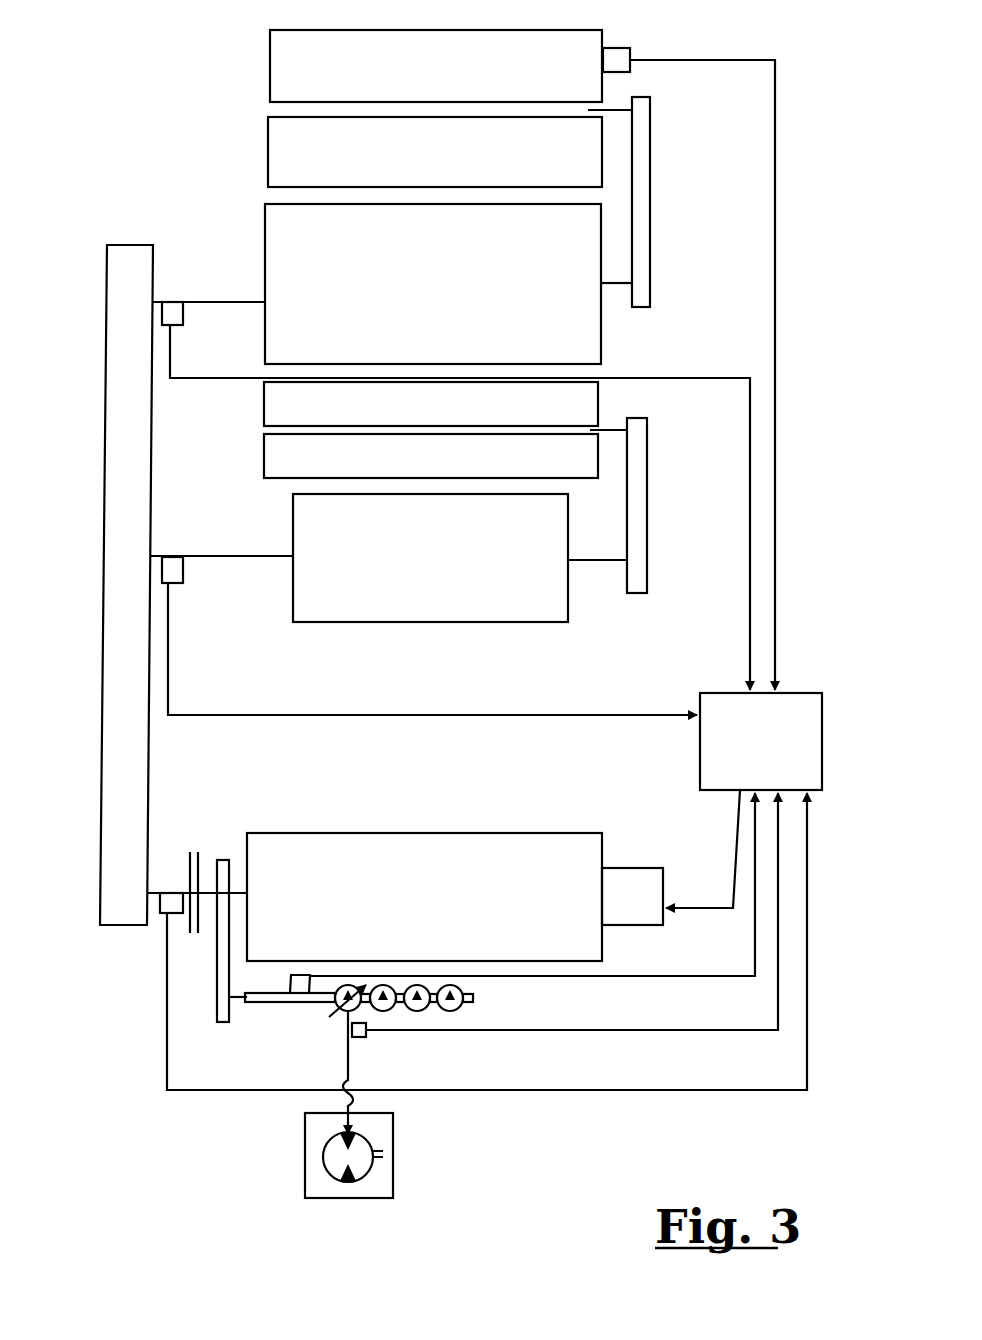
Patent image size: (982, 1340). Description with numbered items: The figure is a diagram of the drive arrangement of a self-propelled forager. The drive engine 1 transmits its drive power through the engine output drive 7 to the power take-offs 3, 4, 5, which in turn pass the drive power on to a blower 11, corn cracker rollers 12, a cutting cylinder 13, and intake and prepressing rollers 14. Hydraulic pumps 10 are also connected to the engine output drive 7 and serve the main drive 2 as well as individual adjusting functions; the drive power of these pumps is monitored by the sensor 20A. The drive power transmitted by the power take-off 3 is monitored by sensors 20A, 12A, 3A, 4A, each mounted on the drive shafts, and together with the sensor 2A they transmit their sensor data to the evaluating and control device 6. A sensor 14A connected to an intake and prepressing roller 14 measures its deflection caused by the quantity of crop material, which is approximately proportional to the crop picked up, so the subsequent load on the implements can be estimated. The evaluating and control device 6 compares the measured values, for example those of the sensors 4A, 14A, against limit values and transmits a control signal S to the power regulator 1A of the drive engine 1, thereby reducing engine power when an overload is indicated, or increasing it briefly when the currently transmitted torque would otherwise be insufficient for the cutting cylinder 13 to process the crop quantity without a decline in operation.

The drive engine 1 is at (435, 916).
The power regulator 1A is at (632, 896).
The main drive 2 is at (380, 1133).
The sensor 2A is at (362, 1040).
The power take-off 3 is at (118, 464).
The sensor 3A is at (178, 570).
The power take-off 4 is at (644, 502).
The sensor 4A is at (175, 310).
The power take-off 5 is at (643, 216).
The evaluating and control device 6 is at (769, 760).
The engine output drive 7 is at (207, 893).
The hydraulic pumps 10 is at (472, 1010).
The blower 11 is at (475, 604).
The corn cracker rollers 12 is at (272, 458).
The sensor 12A is at (168, 912).
The cutting cylinder 13 is at (585, 342).
The intake and prepressing rollers 14 is at (283, 72).
The sensor 14A is at (613, 60).
The sensor 20A is at (292, 975).
The control signal S is at (703, 849).